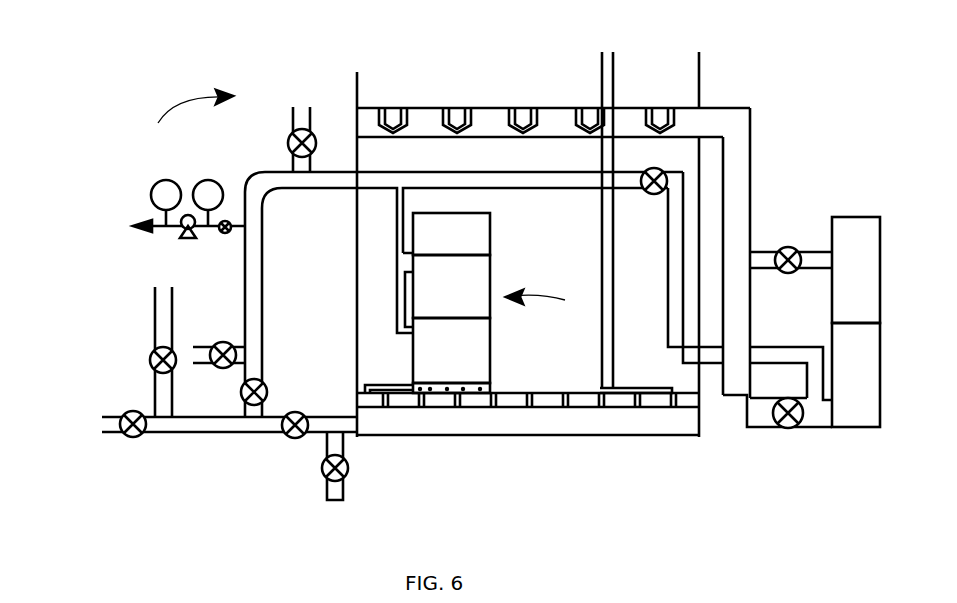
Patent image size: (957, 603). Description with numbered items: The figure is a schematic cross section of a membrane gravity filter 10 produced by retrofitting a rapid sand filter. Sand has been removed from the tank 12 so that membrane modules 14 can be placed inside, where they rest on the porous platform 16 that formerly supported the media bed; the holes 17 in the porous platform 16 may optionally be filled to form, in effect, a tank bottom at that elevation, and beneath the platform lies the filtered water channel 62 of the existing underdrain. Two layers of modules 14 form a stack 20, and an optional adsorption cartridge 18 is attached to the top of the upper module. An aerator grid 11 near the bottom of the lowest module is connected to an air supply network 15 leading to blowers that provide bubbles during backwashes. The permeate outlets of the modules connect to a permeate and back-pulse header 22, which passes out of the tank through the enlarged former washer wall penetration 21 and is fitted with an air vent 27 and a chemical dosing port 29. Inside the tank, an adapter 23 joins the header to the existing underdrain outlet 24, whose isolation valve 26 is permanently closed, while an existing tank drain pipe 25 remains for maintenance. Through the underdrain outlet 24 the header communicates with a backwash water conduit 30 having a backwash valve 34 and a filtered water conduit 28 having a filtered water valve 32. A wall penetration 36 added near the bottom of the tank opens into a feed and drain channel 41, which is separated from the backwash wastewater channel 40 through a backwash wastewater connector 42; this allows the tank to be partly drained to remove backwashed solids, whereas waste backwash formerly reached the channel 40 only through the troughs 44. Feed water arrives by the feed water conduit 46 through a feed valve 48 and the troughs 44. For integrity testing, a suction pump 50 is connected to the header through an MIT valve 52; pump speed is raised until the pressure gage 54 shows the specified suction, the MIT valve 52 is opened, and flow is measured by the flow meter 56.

The membrane gravity filter 10 is at (190, 117).
The aerator grid 11 is at (482, 383).
The tank 12 is at (357, 75).
The membrane modules 14 is at (490, 266).
The air supply network 15 is at (613, 75).
The porous platform 16 is at (592, 410).
The holes 17 is at (635, 408).
The adsorption cartridge 18 is at (490, 222).
The stack 20 is at (549, 301).
The wall penetration 21 is at (337, 170).
The permeate and back-pulse header 22 is at (576, 190).
The adapter 23 is at (668, 322).
The underdrain outlet 24 is at (318, 437).
The tank drain pipe 25 is at (350, 468).
The isolation valve 26 is at (295, 410).
The air vent 27 is at (294, 124).
The filtered water conduit 28 is at (155, 305).
The chemical dosing port 29 is at (232, 342).
The backwash water conduit 30 is at (102, 425).
The filtered water valve 32 is at (150, 357).
The backwash valve 34 is at (133, 440).
The wall penetration 36 is at (710, 400).
The backwash wastewater channel 40 is at (855, 428).
The feed and drain channel 41 is at (750, 157).
The backwash wastewater connector 42 is at (802, 428).
The troughs 44 is at (538, 120).
The feed water conduit 46 is at (855, 217).
The feed valve 48 is at (788, 247).
The suction pump 50 is at (182, 238).
The MIT valve 52 is at (225, 235).
The pressure gage 54 is at (208, 180).
The flow meter 56 is at (152, 197).
The filtered water channel 62 is at (510, 437).